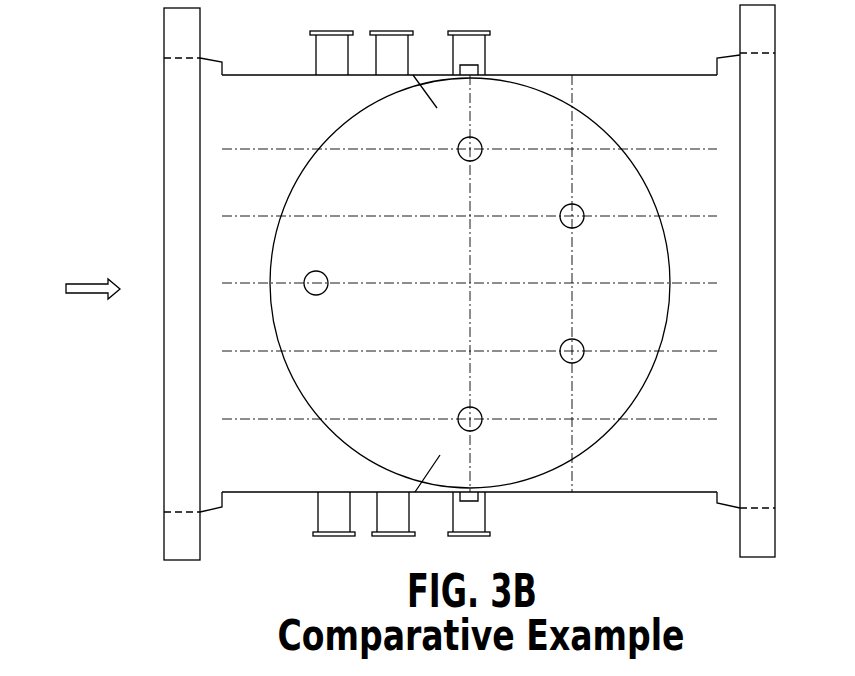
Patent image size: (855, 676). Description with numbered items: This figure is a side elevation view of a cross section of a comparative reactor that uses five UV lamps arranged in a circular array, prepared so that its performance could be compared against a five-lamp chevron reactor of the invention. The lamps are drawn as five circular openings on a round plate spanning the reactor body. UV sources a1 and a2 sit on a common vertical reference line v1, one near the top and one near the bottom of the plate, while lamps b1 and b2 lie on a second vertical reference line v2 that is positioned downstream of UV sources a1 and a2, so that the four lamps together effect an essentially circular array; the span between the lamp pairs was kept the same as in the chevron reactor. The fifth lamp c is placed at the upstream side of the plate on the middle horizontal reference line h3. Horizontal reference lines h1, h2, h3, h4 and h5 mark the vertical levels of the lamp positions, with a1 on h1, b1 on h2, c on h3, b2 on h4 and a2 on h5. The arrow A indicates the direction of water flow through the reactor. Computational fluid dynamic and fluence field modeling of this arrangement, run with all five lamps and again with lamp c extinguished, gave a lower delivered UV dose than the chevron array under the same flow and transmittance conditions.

The UV source a1 is at (477, 143).
The UV source a2 is at (480, 430).
The lamp b1 is at (580, 206).
The lamp b2 is at (583, 338).
The lamp c is at (317, 280).
The first vertical reference line v1 is at (469, 198).
The second vertical reference line v2 is at (567, 158).
The first horizontal reference line h1 is at (264, 148).
The second horizontal reference line h2 is at (264, 215).
The third horizontal reference line h3 is at (267, 282).
The fourth horizontal reference line h4 is at (264, 350).
The fifth horizontal reference line h5 is at (264, 418).
The flow direction A is at (82, 291).